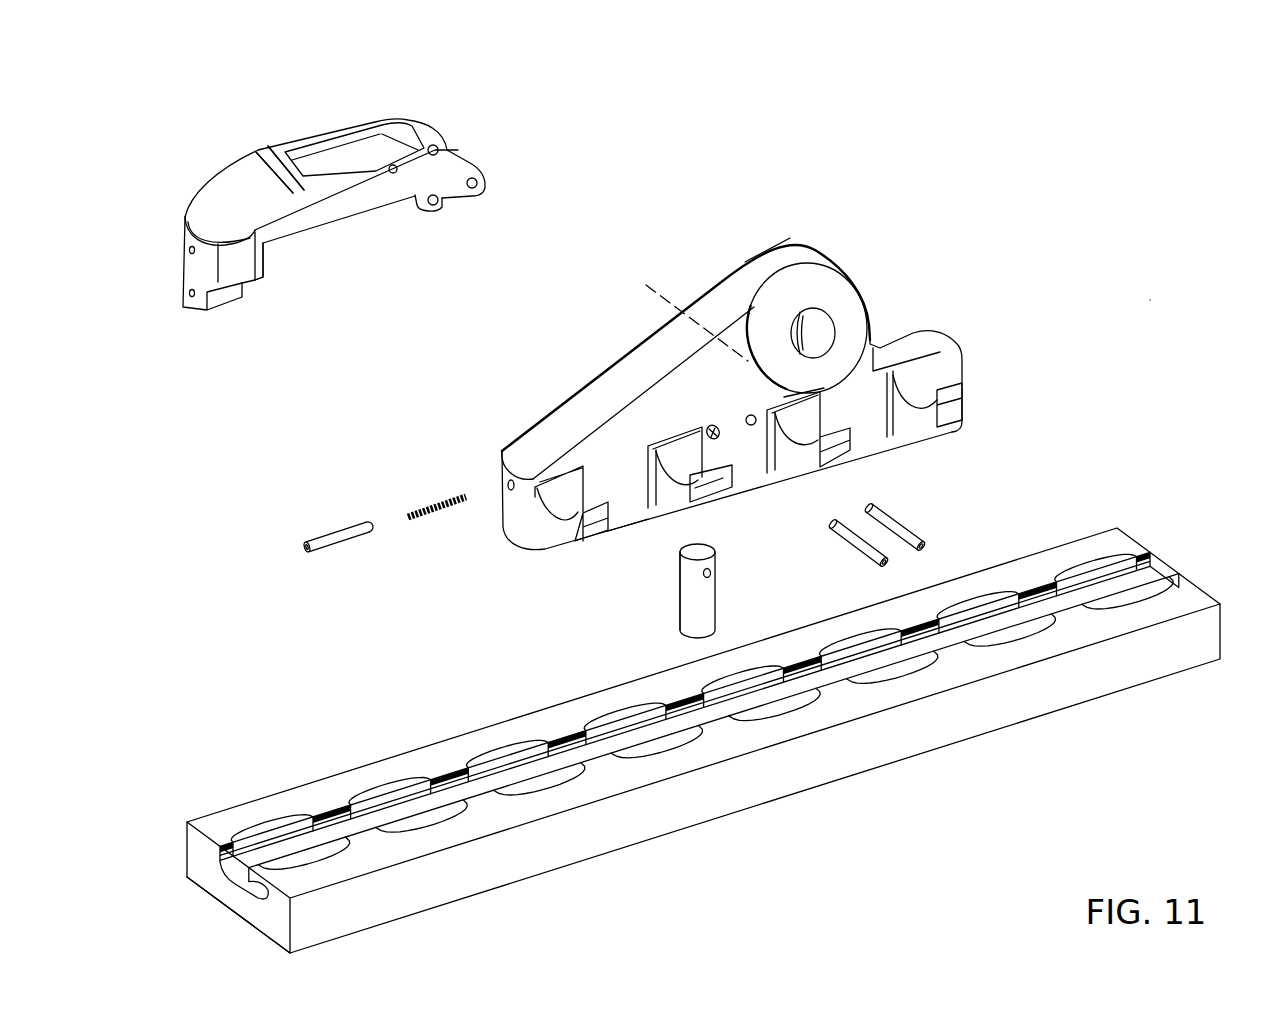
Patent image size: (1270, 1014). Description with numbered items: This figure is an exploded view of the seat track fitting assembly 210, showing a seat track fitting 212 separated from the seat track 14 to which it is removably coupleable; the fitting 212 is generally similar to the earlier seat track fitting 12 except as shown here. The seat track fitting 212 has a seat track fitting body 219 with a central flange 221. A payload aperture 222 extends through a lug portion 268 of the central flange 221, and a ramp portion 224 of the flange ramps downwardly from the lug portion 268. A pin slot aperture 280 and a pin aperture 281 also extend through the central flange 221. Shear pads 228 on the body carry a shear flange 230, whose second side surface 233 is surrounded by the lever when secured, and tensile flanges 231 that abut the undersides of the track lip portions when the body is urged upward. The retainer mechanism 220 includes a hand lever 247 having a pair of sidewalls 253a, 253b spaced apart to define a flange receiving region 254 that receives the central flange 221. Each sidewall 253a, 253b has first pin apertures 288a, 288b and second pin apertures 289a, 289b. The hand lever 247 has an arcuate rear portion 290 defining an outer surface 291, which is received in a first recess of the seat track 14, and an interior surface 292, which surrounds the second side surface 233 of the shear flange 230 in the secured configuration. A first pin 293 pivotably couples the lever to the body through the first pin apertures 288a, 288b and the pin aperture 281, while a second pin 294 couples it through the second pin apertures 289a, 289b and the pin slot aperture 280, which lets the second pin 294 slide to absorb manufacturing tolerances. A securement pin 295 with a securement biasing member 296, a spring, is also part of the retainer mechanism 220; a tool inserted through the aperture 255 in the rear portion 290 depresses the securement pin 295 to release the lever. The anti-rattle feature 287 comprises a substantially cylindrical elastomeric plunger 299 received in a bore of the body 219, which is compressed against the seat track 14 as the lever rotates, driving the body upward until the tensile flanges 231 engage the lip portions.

The seat track 14 is at (1190, 600).
The seat track fitting 12 is at (643, 283).
The seat track fitting assembly 210 is at (1155, 298).
The seat track fitting 212 is at (893, 330).
The seat track fitting body 219 is at (793, 247).
The retainer mechanism 220 is at (258, 130).
The central flange 221 is at (628, 493).
The payload aperture 222 is at (818, 327).
The ramp portion 224 is at (577, 423).
The shear pad 228 is at (670, 490).
The shear flange 230 is at (678, 450).
The tensile flange 231 is at (840, 448).
The second side surface 233 is at (545, 527).
The hand lever 247 is at (333, 135).
The sidewall 253a is at (363, 195).
The sidewall 253b is at (413, 140).
The flange receiving region 254 is at (462, 152).
The aperture 255 is at (507, 500).
The lug portion 268 is at (780, 302).
The pin slot aperture 280 is at (727, 447).
The pin aperture 281 is at (758, 433).
The anti-rattle feature 287 is at (668, 622).
The first pin aperture 288a is at (481, 185).
The first pin aperture 288b is at (418, 130).
The second pin aperture 289a is at (442, 206).
The second pin aperture 289b is at (387, 155).
The rear portion 290 is at (215, 198).
The outer surface 291 is at (183, 275).
The interior surface 292 is at (270, 260).
The first pin 293 is at (907, 520).
The second pin 294 is at (853, 543).
The securement pin 295 is at (327, 530).
The securement biasing member 296 is at (427, 505).
The plunger 299 is at (707, 617).